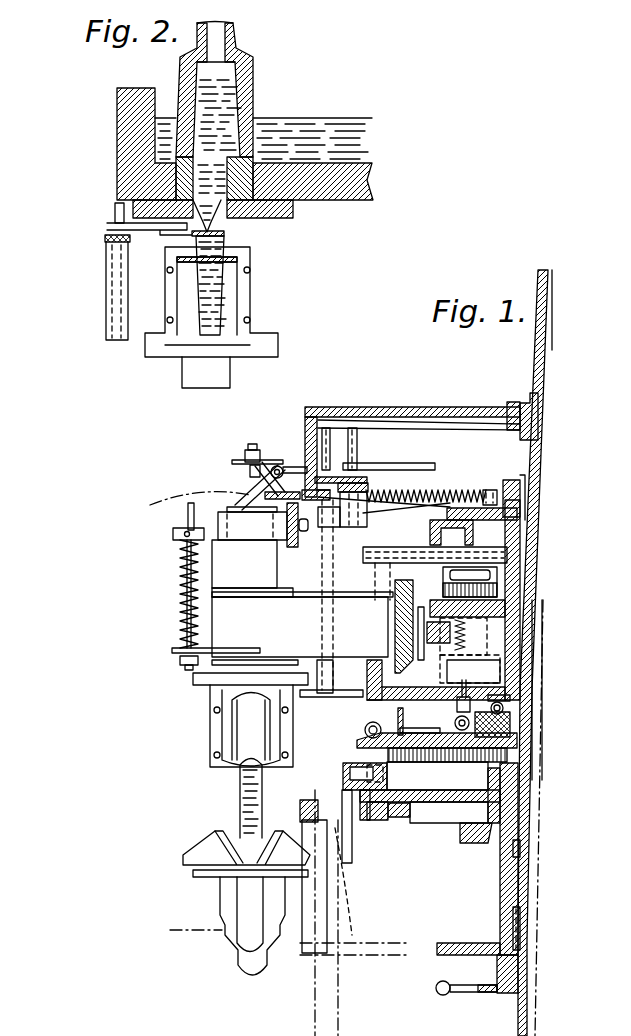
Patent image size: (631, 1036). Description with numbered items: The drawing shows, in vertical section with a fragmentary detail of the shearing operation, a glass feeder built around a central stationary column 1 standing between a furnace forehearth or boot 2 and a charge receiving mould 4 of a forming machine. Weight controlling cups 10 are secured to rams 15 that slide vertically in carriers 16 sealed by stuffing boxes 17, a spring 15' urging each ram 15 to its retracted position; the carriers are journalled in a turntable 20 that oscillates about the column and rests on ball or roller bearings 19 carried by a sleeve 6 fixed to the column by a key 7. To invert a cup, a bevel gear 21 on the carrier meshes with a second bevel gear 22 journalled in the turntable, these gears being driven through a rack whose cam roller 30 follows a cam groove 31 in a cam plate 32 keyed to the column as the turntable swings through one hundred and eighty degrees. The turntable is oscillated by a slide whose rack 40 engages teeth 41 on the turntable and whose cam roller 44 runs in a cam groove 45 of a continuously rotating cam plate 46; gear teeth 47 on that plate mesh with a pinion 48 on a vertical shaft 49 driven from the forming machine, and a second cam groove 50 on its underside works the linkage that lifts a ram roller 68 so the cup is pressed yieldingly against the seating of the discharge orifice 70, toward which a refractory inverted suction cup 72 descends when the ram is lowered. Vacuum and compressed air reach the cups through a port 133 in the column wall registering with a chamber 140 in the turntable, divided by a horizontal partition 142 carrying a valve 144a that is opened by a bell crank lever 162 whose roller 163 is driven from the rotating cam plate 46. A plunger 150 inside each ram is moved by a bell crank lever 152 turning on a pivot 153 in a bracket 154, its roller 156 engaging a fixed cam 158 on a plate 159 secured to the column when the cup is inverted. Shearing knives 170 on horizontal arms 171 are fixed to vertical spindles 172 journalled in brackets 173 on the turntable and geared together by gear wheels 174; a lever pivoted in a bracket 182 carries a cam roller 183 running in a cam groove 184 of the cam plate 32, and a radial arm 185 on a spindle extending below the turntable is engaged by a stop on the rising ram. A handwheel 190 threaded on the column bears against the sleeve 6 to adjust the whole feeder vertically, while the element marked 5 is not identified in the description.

In FIG. 1, the central stationary column 1 is at (530, 395).
In FIG. 2, the furnace forehearth or boot 2 is at (136, 143).
In FIG. 1, the blank or charge receiving mould 4 is at (247, 543).
In FIG. 1, the filling head axis 5 is at (253, 629).
In FIG. 1, the sleeve 6 is at (267, 700).
In FIG. 1, the key 7 is at (516, 925).
In FIG. 2, the weight controlling cup 10 is at (247, 297).
In FIG. 1, the weight controlling cup 10 is at (217, 722).
In FIG. 2, the ram 15 is at (170, 377).
In FIG. 1, the ram 15 is at (186, 594).
In FIG. 1, the spring 15' is at (151, 574).
In FIG. 1, the carrier 16 is at (223, 648).
In FIG. 1, the stuffing box 17 is at (183, 589).
In FIG. 1, the ball or roller bearings 19 is at (510, 700).
In FIG. 1, the turntable 20 is at (355, 600).
In FIG. 1, the bevel gear 21 is at (400, 600).
In FIG. 1, the second bevel gear 22 is at (415, 582).
In FIG. 1, the cam roller 30 is at (450, 503).
In FIG. 1, the cam groove 31 is at (440, 532).
In FIG. 1, the cam plate 32 is at (453, 508).
In FIG. 1, the rack 40 is at (462, 752).
In FIG. 1, the teeth 41 is at (510, 737).
In FIG. 1, the cam roller 44 is at (352, 772).
In FIG. 1, the cam groove 45 is at (250, 785).
In FIG. 1, the continuously rotating cam plate 46 is at (412, 808).
In FIG. 1, the gear teeth 47 is at (350, 833).
In FIG. 1, the pinion 48 is at (340, 807).
In FIG. 1, the vertically disposed shaft 49 is at (338, 980).
In FIG. 1, the second cam groove 50 is at (390, 817).
In FIG. 1, the roller 68 is at (305, 522).
In FIG. 2, the discharge orifice 70 is at (268, 218).
In FIG. 2, the refractory inverted suction cup 72 is at (252, 82).
In FIG. 1, the port 133 is at (397, 643).
In FIG. 1, the chamber 140 is at (370, 685).
In FIG. 1, the horizontal partition 142 is at (475, 667).
In FIG. 1, the valve 144a is at (483, 636).
In FIG. 1, the plunger 150 is at (250, 477).
In FIG. 1, the bell crank lever 152 is at (268, 460).
In FIG. 1, the pivot 153 is at (278, 466).
In FIG. 1, the bracket 154 is at (243, 477).
In FIG. 1, the roller 156 is at (187, 520).
In FIG. 1, the fixed cam 158 is at (320, 478).
In FIG. 1, the plate 159 is at (330, 412).
In FIG. 1, the bell crank lever 162 is at (385, 780).
In FIG. 1, the roller 163 is at (364, 881).
In FIG. 2, the shearing knives 170 is at (222, 236).
In FIG. 1, the shearing knives 170 is at (422, 465).
In FIG. 2, the horizontally disposed arm 171 is at (128, 228).
In FIG. 1, the horizontally disposed arm 171 is at (395, 462).
In FIG. 2, the vertically disposed spindle 172 is at (115, 215).
In FIG. 1, the vertically disposed spindle 172 is at (353, 430).
In FIG. 1, the bracket 173 is at (342, 522).
In FIG. 1, the gear wheels 174 is at (312, 407).
In FIG. 1, the bracket 182 is at (393, 492).
In FIG. 1, the cam roller 183 is at (487, 490).
In FIG. 1, the cam groove 184 is at (505, 505).
In FIG. 1, the radial arm 185 is at (362, 695).
In FIG. 1, the handwheel 190 is at (497, 992).